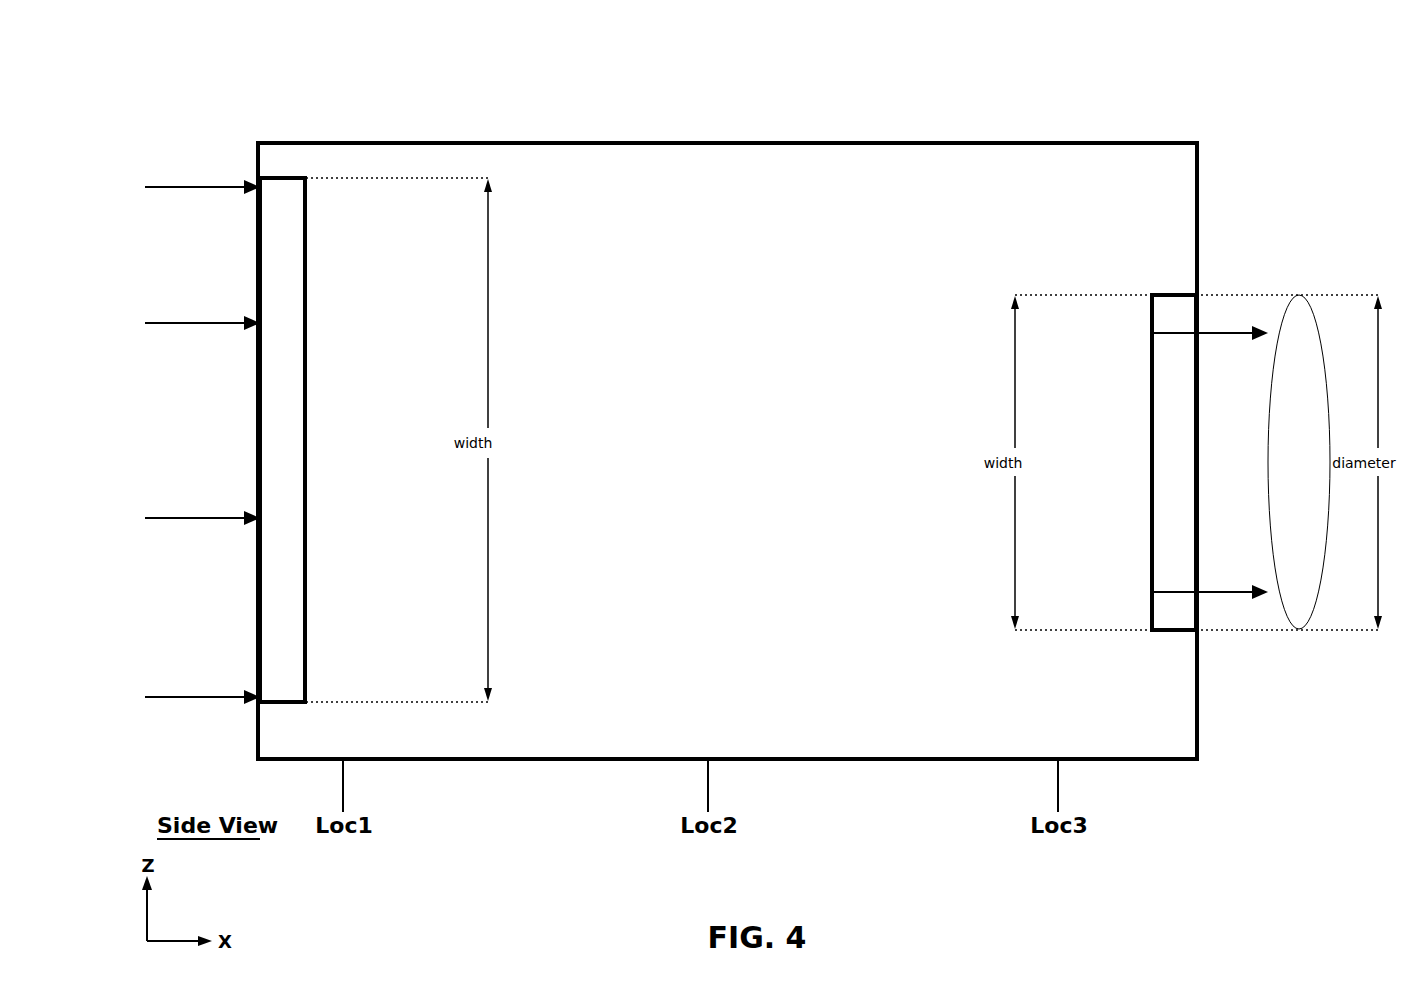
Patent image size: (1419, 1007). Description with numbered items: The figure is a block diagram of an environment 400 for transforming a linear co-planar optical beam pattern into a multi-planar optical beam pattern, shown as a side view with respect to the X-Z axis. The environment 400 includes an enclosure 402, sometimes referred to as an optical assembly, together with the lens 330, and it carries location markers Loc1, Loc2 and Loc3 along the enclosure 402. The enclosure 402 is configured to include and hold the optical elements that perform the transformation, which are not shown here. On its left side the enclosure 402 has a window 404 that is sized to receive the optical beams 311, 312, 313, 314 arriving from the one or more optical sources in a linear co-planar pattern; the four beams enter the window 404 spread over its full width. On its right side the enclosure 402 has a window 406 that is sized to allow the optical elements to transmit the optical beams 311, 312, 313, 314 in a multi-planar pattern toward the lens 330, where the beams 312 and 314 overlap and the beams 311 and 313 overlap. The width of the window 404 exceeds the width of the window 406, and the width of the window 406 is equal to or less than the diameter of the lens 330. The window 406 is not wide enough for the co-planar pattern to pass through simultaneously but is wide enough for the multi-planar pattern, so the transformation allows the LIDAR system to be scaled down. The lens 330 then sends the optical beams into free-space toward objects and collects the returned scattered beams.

The environment 400 is at (250, 97).
The enclosure 402 is at (755, 142).
The window 404 is at (306, 360).
The window 406 is at (1151, 437).
The optical beam 311 is at (232, 696).
The optical beam 312 is at (232, 517).
The optical beam 313 is at (232, 322).
The optical beam 314 is at (232, 186).
The lens 330 is at (1299, 295).